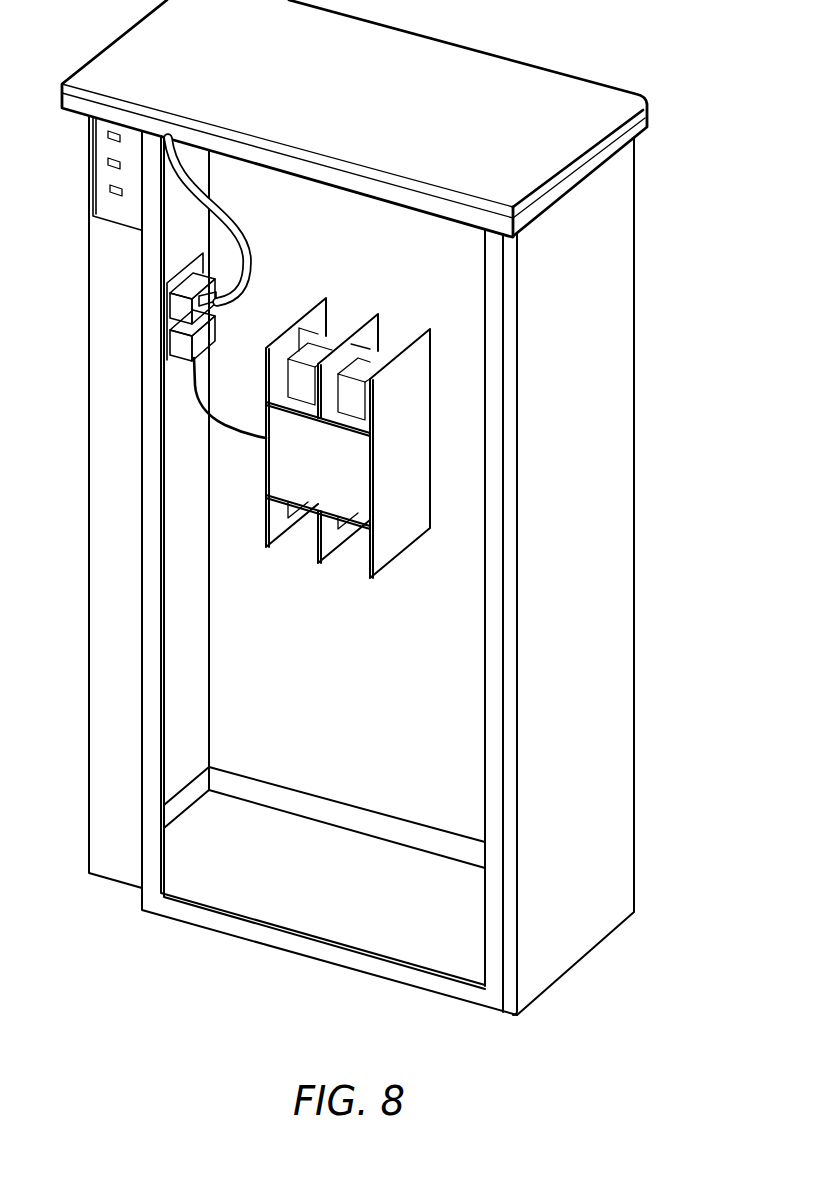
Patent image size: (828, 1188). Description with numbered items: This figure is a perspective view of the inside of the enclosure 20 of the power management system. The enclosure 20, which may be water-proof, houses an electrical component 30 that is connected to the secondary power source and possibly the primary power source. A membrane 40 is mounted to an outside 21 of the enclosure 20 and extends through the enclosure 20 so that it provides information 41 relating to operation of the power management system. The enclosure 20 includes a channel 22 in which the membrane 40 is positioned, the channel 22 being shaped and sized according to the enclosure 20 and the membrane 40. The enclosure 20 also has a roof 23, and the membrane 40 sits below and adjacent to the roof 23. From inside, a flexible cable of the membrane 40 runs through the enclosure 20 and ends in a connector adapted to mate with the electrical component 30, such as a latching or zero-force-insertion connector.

The enclosure 20 is at (381, 507).
The outside 21 is at (615, 472).
The channel 22 is at (110, 483).
The roof 23 is at (382, 45).
The electrical component 30 is at (405, 452).
The membrane 40 is at (97, 177).
The information 41 is at (107, 123).